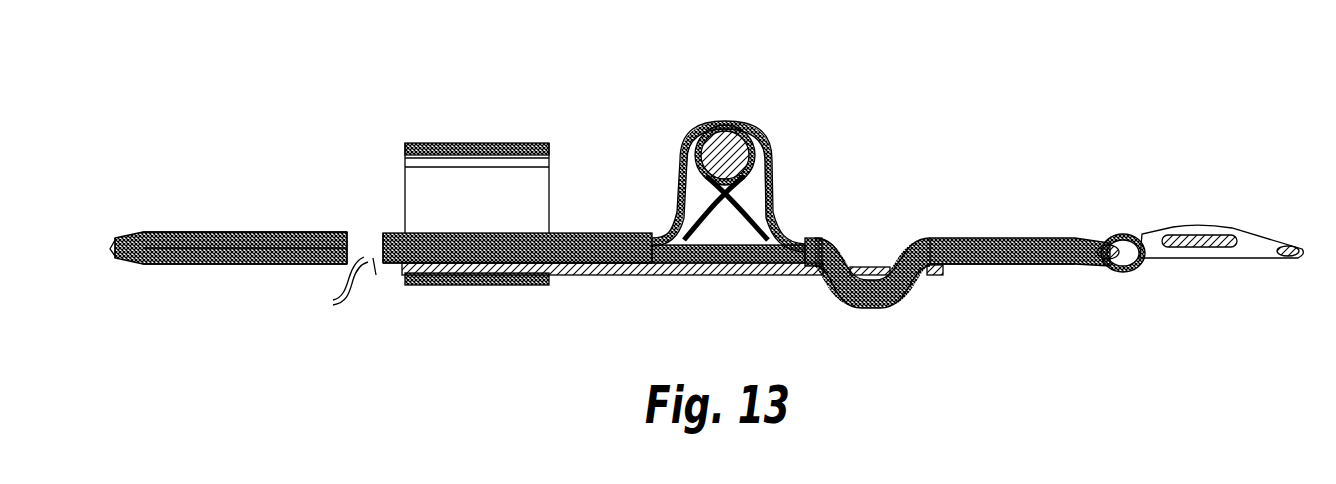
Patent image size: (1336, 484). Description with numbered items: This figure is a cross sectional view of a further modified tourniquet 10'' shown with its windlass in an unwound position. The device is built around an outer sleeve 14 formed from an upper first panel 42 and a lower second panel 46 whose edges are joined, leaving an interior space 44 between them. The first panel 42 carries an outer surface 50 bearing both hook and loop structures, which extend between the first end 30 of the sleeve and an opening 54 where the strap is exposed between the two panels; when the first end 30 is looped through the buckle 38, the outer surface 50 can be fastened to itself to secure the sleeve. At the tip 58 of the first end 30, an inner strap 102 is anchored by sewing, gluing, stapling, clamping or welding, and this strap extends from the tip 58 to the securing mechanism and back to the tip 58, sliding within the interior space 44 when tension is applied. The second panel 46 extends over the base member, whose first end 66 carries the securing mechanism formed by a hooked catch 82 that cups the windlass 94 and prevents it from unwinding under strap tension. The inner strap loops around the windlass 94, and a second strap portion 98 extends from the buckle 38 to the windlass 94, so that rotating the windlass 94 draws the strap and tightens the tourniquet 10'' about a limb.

The tourniquet 10'' is at (705, 195).
The outer sleeve 14 is at (564, 222).
The first end 30 is at (158, 222).
The buckle 38 is at (1153, 230).
The first panel 42 is at (188, 232).
The interior space 44 is at (360, 228).
The second panel 46 is at (193, 264).
The outer surface 50 is at (260, 230).
The opening 54 is at (668, 228).
The tip 58 is at (113, 254).
The first end of base member 66 is at (468, 292).
The hooked catch 82 is at (538, 180).
The windlass 94 is at (733, 147).
The inner strap second portion 98 is at (1082, 233).
The inner strap 102 is at (340, 301).